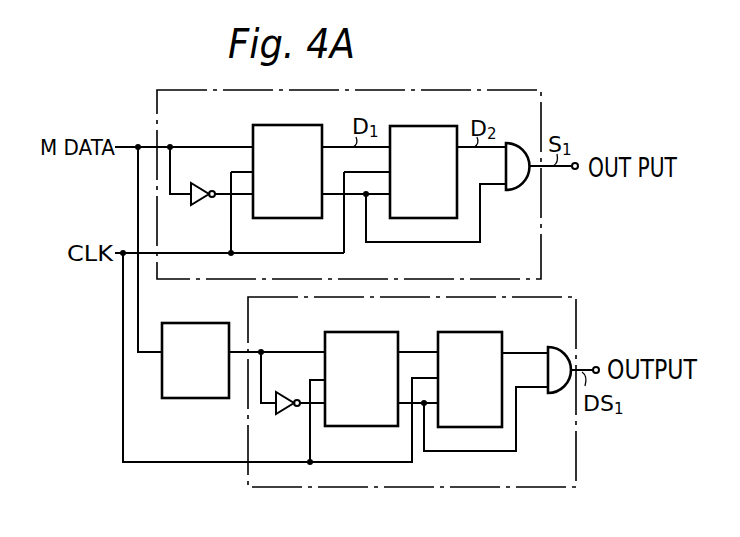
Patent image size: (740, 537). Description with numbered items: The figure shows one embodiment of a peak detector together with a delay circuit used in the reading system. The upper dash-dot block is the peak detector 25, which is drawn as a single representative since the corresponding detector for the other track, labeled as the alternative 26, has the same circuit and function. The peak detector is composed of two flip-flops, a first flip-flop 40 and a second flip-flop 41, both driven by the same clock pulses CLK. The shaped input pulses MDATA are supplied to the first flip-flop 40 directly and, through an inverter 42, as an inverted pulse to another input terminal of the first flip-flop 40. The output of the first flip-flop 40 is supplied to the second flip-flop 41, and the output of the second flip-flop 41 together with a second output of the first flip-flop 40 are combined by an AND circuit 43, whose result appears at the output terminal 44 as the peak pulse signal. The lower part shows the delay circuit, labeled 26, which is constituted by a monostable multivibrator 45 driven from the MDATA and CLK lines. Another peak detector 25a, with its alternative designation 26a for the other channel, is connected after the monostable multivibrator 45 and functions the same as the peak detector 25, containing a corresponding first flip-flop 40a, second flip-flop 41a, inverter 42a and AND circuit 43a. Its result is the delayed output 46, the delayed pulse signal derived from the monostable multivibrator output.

The peak detector 25 is at (358, 90).
The delay circuit 26 is at (162, 423).
The first flip-flop 40 is at (282, 125).
The second flip-flop 41 is at (415, 126).
The inverter 42 is at (196, 205).
The AND circuit 43 is at (512, 143).
The output terminal 44 is at (575, 169).
The monostable multivibrator 45 is at (197, 398).
The delayed output 46 is at (598, 367).
The peak detector 25a is at (365, 487).
The delayed data identification circuit (alternative) 26a is at (498, 509).
The first flip-flop 40a is at (348, 332).
The second flip-flop 41a is at (461, 332).
The inverter 42a is at (283, 414).
The AND gate 43a is at (553, 347).